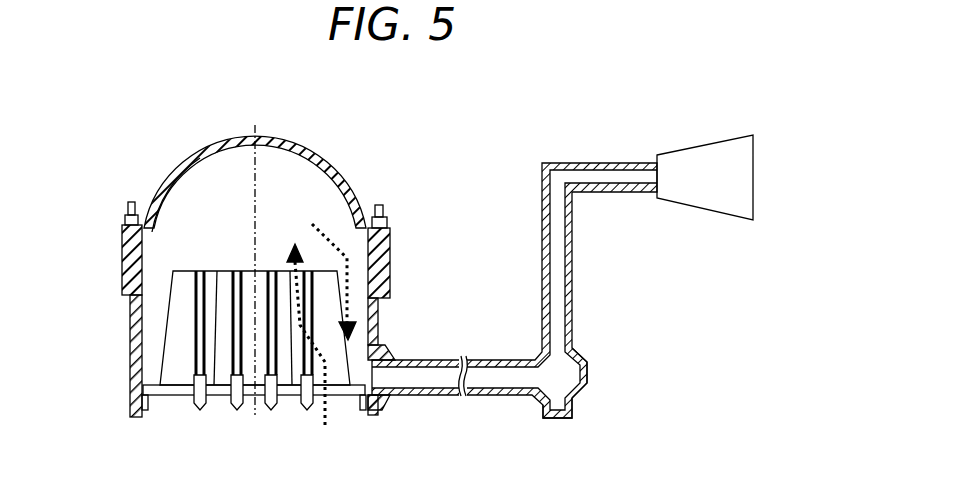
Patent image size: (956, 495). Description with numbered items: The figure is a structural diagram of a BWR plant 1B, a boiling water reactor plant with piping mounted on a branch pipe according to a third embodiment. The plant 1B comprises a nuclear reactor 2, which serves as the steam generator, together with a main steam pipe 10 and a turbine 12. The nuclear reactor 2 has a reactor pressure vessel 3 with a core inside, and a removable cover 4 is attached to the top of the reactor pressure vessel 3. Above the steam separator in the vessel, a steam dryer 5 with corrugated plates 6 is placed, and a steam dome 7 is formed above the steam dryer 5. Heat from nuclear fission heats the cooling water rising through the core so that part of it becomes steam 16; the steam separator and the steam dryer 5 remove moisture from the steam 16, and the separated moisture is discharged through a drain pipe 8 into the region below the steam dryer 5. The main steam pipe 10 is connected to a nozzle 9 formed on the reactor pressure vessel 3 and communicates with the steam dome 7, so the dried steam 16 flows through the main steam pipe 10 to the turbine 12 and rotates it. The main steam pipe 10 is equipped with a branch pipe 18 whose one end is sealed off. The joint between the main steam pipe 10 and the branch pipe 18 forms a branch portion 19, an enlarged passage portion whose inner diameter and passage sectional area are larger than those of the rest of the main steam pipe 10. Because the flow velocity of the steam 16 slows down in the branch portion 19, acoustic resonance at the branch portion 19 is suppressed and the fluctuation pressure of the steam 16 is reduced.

The BWR plant 1B is at (458, 158).
The nuclear reactor 2 is at (304, 150).
The reactor pressure vessel 3 is at (130, 352).
The removable cover 4 is at (168, 176).
The steam dryer 5 is at (180, 315).
The corrugated plates 6 is at (200, 271).
The steam dome 7 is at (238, 210).
The drain pipe 8 is at (200, 412).
The nozzle 9 is at (378, 412).
The main steam pipe 10 is at (495, 396).
The turbine 12 is at (700, 213).
The steam 16 is at (325, 427).
The branch pipe 18 is at (573, 417).
The branch portion 19 is at (588, 370).